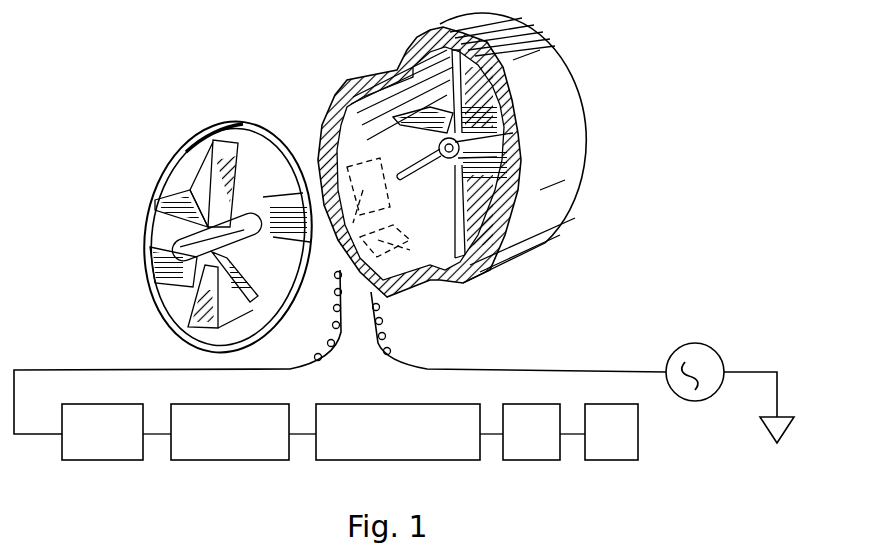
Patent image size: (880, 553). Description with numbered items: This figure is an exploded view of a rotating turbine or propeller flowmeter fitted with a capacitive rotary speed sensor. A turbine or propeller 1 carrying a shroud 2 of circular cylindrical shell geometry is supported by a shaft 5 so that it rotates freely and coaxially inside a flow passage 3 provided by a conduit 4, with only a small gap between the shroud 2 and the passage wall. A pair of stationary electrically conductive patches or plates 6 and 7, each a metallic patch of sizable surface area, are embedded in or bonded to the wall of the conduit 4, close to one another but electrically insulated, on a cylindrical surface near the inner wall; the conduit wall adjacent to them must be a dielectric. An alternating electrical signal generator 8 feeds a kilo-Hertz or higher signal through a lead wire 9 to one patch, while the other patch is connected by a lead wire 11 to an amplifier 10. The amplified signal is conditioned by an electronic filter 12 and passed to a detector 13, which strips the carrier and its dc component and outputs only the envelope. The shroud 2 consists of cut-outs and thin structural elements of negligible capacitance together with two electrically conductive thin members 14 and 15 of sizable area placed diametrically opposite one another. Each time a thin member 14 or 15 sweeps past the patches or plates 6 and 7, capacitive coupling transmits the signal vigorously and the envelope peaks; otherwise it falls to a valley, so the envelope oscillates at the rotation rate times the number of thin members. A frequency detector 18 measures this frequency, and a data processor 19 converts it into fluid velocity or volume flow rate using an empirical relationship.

The turbine or propeller 1 is at (202, 178).
The shroud 2 is at (152, 192).
The flow passage 3 is at (445, 262).
The conduit 4 is at (566, 144).
The shaft 5 is at (378, 128).
The patch or plate 6 is at (319, 167).
The patch or plate 7 is at (400, 273).
The alternating electrical signal generator 8 is at (670, 356).
The lead wire 9 is at (577, 370).
The amplifier 10 is at (101, 462).
The lead wire 11 is at (120, 370).
The electronic filter 12 is at (230, 462).
The detector 13 is at (370, 462).
The electrically conductive thin member 14 is at (148, 283).
The electrically conductive thin member 15 is at (277, 170).
The frequency detector 18 is at (529, 462).
The data processor 19 is at (608, 462).